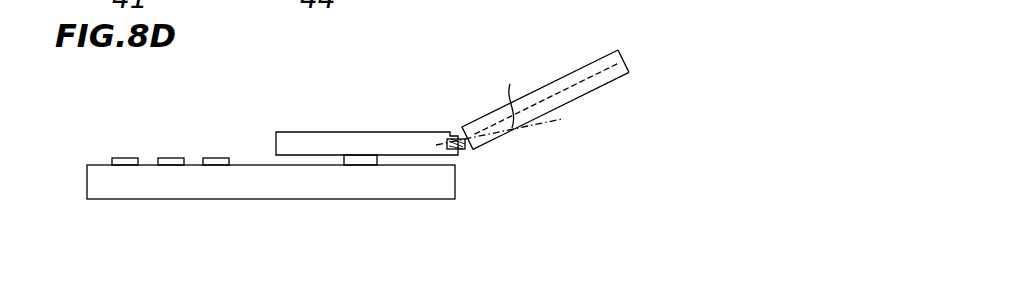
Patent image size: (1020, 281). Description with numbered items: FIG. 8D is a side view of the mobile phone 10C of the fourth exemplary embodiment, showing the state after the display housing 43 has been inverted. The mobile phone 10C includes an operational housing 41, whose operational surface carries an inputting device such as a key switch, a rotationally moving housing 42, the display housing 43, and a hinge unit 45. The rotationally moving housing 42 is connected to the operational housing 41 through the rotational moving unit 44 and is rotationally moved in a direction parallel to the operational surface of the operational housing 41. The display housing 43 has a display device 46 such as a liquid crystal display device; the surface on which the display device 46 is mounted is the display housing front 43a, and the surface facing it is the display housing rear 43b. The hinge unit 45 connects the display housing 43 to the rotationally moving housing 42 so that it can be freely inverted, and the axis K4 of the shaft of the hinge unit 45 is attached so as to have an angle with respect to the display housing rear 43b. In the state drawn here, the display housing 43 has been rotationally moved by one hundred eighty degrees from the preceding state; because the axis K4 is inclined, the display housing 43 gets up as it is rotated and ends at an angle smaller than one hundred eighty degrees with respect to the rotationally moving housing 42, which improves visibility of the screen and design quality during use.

The mobile phone 10C is at (213, 128).
The operational housing 41 is at (163, 180).
The rotationally moving housing 42 is at (347, 142).
The display housing 43 is at (580, 88).
The display housing front 43a is at (613, 50).
The display housing rear 43b is at (603, 85).
The rotational moving unit 44 is at (358, 160).
The hinge unit 45 is at (459, 150).
The display device 46 is at (495, 112).
The axis K4 is at (530, 124).